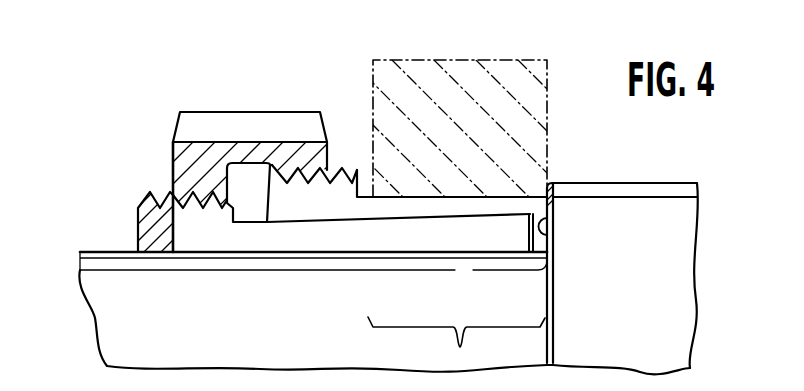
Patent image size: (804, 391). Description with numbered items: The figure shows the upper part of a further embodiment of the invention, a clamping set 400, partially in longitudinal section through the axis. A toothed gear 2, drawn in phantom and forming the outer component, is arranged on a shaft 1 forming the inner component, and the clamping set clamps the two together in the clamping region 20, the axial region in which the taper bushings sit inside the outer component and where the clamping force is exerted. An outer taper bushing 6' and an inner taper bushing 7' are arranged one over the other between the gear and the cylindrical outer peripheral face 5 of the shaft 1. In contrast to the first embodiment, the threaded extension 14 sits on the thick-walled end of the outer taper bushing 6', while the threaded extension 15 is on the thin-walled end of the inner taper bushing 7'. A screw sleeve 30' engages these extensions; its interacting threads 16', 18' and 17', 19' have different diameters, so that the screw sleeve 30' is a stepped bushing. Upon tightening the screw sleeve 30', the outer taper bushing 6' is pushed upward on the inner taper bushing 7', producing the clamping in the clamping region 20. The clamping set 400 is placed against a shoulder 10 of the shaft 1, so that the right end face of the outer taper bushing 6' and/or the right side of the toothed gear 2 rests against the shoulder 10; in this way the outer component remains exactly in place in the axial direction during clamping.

The clamping set 400 is at (266, 95).
The screw sleeve 30' is at (247, 153).
The thread 16' is at (314, 122).
The thread 18' is at (442, 242).
The thread 17' is at (158, 197).
The thread 19' is at (172, 228).
The threaded extension 15 is at (213, 232).
The threaded extension 14 is at (317, 205).
The outer taper bushing 6' is at (400, 262).
The inner taper bushing 7' is at (313, 278).
The cylindrical outer peripheral face 5 is at (93, 252).
The shaft 1 is at (95, 318).
The toothed gear 2 is at (547, 130).
The shoulder 10 is at (553, 218).
The clamping region 20 is at (458, 347).